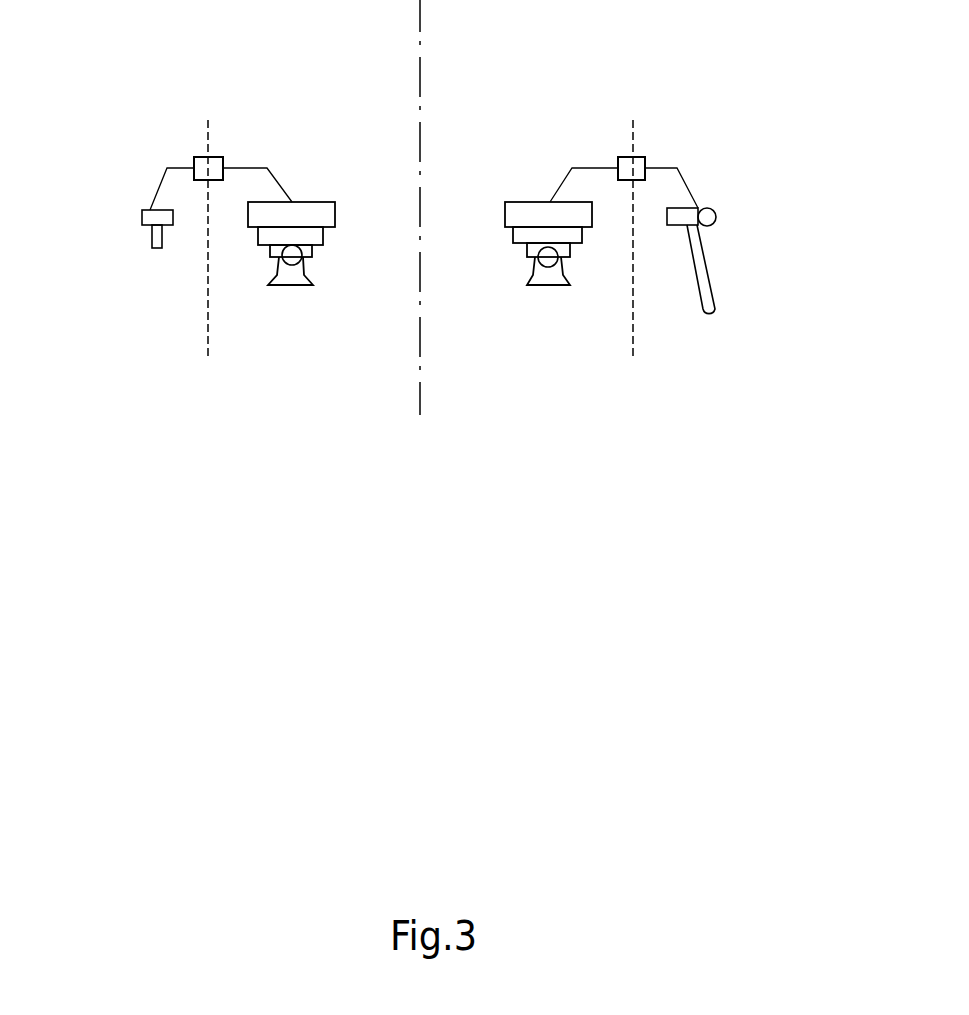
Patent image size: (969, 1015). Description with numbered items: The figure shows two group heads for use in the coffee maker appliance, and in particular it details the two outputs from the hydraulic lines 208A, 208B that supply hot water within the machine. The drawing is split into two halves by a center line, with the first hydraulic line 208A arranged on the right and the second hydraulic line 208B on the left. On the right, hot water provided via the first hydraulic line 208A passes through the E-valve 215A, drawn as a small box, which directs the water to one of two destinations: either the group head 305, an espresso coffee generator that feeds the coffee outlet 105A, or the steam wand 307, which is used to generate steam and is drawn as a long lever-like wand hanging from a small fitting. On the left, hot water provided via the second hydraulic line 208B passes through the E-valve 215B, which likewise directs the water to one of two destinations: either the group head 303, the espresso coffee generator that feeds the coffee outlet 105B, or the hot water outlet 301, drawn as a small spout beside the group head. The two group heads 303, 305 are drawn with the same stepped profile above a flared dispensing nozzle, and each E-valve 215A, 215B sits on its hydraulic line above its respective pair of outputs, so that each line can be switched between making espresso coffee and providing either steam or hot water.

The second hydraulic line 208B is at (213, 184).
The first hydraulic line 208A is at (636, 184).
The E-valve 215B is at (174, 129).
The E-valve 215A is at (698, 174).
The hot water outlet 301 is at (110, 277).
The group head 303 is at (326, 289).
The group head 305 is at (604, 288).
The steam wand 307 is at (746, 332).
The coffee outlet 105B is at (206, 419).
The coffee outlet 105A is at (541, 419).